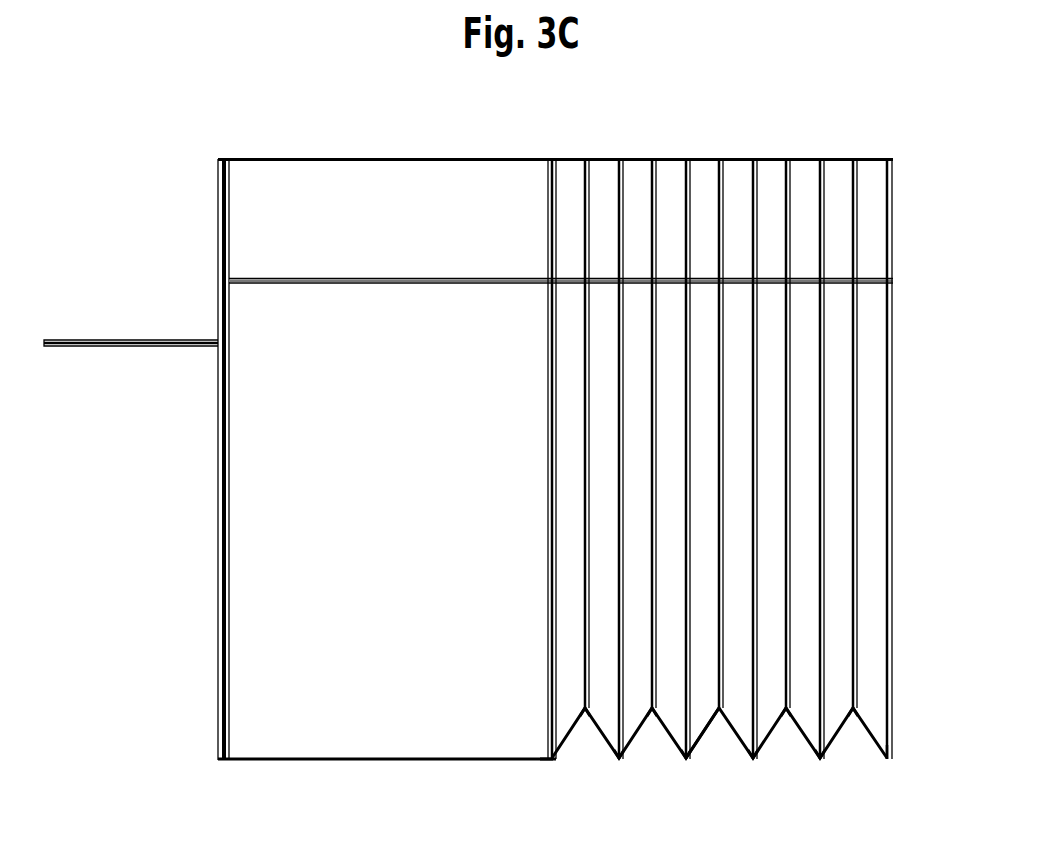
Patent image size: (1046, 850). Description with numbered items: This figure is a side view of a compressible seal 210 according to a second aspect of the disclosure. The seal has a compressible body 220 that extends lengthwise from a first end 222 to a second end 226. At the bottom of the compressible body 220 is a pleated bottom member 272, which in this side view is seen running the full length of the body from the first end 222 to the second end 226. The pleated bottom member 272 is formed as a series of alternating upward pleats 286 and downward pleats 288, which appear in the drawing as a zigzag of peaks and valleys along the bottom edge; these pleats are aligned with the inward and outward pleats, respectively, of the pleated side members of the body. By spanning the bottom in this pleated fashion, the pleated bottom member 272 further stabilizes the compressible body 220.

The heat sink body 210 is at (536, 131).
The compressible body 220 is at (548, 148).
The first end 222 is at (542, 771).
The second end 226 is at (895, 765).
The pleated bottom member 272 is at (663, 749).
The upward pleats 286 is at (586, 711).
The downward pleats 288 is at (553, 759).